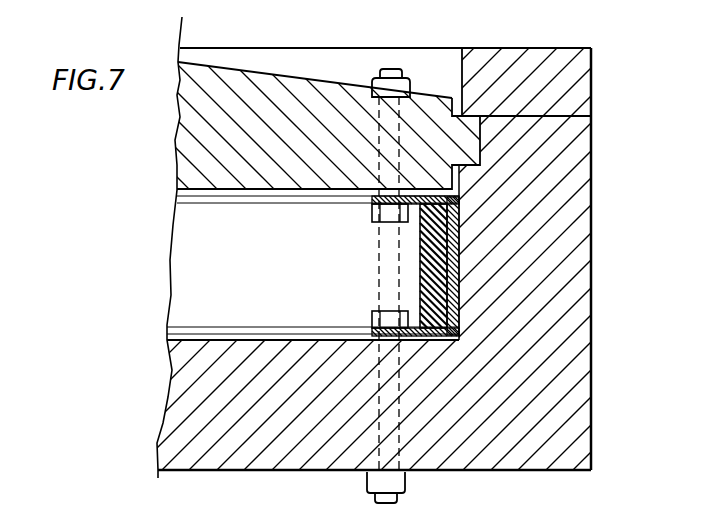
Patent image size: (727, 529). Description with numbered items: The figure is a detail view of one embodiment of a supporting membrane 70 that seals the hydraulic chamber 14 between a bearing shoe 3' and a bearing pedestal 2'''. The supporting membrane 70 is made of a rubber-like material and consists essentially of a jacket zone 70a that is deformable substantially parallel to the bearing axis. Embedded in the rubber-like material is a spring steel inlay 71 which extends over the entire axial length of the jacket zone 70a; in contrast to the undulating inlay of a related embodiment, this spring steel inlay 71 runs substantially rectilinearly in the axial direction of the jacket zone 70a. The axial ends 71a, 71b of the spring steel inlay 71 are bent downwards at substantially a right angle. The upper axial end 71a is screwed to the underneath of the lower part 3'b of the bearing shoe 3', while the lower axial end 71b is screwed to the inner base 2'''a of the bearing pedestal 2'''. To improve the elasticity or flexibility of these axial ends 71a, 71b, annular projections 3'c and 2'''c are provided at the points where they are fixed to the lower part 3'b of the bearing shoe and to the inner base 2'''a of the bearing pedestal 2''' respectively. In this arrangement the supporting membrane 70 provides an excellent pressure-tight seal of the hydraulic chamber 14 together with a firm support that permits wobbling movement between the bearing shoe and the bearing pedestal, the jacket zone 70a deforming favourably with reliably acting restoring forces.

The bearing shoe 3' is at (338, 96).
The lower part of the bearing shoe 3'b is at (315, 52).
The annular projection 3'c is at (370, 217).
The hydraulic chamber 14 is at (190, 258).
The bearing pedestal 2''' is at (363, 259).
The inner base of the bearing pedestal 2'''a is at (313, 315).
The annular projection 2'''c is at (370, 313).
The supporting membrane 70 is at (420, 247).
The jacket zone 70a is at (461, 258).
The spring steel inlay 71 is at (440, 292).
The axial end of the spring steel inlay 71a is at (461, 211).
The axial end of the spring steel inlay 71b is at (441, 341).